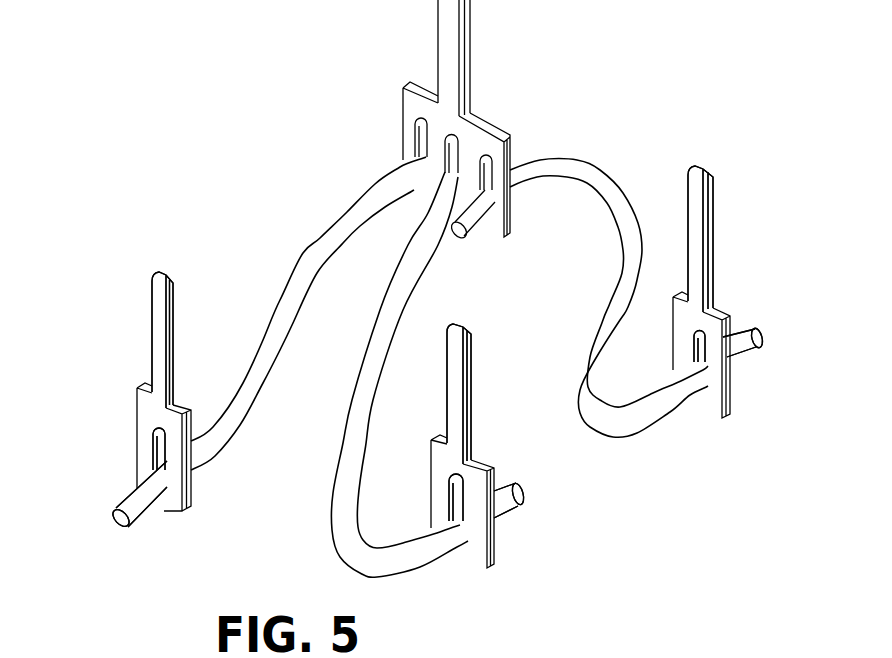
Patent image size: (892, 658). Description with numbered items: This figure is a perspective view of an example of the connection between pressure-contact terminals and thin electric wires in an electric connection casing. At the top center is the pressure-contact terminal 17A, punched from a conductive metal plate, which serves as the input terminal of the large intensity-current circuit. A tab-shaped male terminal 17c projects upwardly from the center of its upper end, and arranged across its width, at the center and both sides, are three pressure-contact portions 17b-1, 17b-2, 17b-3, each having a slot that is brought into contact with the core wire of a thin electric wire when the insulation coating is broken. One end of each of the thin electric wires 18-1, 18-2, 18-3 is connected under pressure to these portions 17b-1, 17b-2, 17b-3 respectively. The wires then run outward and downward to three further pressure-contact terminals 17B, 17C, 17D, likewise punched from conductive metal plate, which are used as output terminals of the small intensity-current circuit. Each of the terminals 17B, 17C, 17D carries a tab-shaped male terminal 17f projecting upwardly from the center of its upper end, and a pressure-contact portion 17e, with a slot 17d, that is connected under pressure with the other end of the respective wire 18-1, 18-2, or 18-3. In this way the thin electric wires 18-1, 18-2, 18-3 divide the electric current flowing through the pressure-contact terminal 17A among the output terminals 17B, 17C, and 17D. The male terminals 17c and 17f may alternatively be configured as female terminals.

The pressure-contact terminal 17A is at (450, 120).
The pressure-contact terminal 17B is at (152, 357).
The pressure-contact terminal 17C is at (471, 410).
The pressure-contact terminal 17D is at (713, 258).
The tab-shaped male terminal 17c is at (438, 33).
The pressure-contact portion 17b-1 is at (416, 132).
The pressure-contact portion 17b-2 is at (455, 142).
The pressure-contact portion 17b-3 is at (492, 162).
The wire insertion slot 17d is at (155, 440).
The pressure-contact portion 17e is at (163, 510).
The tab-shaped male terminal 17f is at (158, 303).
The thin electric wire 18-1 is at (303, 258).
The thin electric wire 18-2 is at (343, 450).
The thin electric wire 18-3 is at (622, 230).